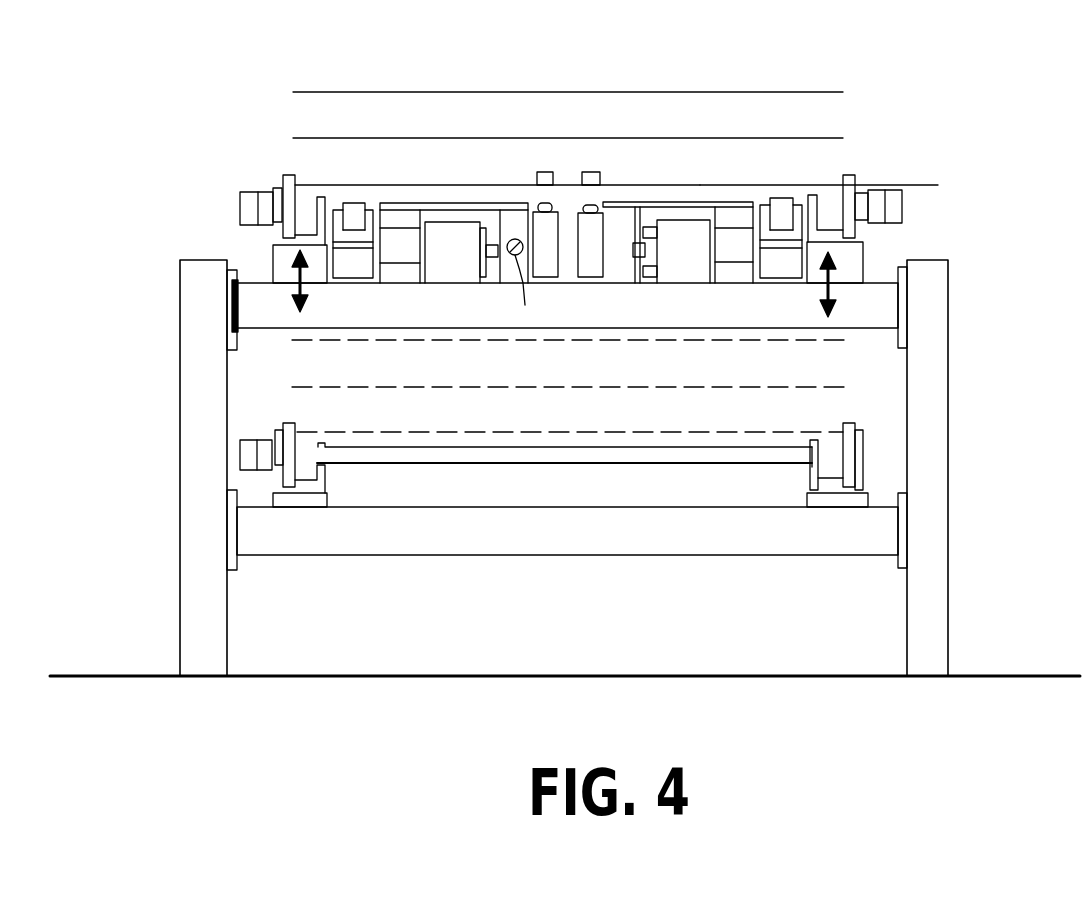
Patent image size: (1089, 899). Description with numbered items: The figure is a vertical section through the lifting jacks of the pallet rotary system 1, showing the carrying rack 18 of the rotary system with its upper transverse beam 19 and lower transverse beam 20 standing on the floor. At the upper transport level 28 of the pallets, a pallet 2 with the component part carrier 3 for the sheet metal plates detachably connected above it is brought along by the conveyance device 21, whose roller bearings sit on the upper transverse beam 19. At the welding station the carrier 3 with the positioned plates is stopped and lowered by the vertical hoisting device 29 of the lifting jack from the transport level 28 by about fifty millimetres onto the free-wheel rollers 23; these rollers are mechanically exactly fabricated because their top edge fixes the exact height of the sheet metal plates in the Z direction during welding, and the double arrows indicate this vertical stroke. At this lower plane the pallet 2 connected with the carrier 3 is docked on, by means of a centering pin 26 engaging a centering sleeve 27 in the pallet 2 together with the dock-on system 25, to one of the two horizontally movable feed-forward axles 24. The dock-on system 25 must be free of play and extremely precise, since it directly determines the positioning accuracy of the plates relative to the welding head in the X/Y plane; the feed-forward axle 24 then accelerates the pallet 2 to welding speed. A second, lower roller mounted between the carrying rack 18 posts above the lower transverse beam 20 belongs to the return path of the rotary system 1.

The pallet rotary system 1 is at (150, 245).
The pallet 2 is at (450, 183).
The component part carrier 3 is at (512, 115).
The carrying rack 18 is at (932, 372).
The upper transverse beam 19 is at (887, 305).
The lower transverse beam 20 is at (877, 533).
The conveyance device 21 is at (263, 198).
The free-wheel rollers 23 is at (790, 205).
The feed-forward axle 24 is at (618, 260).
The dock-on system 25 is at (590, 172).
The centering pin 26 is at (590, 205).
The centering sleeve 27 is at (595, 172).
The transport level 28 is at (925, 183).
The vertical hoisting device 29 is at (845, 263).